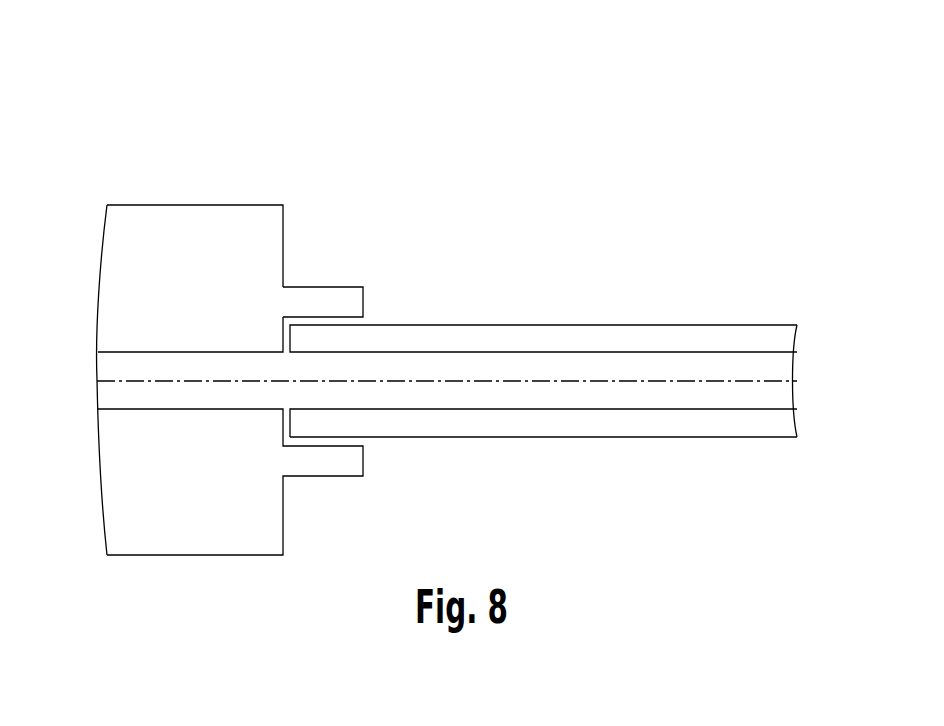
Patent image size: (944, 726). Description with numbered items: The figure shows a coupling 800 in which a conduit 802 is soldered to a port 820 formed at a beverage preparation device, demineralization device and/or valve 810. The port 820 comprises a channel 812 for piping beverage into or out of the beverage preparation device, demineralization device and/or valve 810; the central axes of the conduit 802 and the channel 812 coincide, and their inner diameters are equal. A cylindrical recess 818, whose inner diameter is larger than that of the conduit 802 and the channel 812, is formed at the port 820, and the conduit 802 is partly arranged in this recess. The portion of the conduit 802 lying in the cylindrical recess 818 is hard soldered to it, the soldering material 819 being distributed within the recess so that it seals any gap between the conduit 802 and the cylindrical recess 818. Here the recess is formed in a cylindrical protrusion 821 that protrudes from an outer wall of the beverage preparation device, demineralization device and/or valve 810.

The coupling 800 is at (645, 82).
The conduit 802 is at (737, 342).
The beverage preparation device, demineralization device and/or valve 810 is at (275, 513).
The channel 812 is at (183, 358).
The cylindrical recess 818 is at (346, 418).
The soldering material 819 is at (357, 440).
The port 820 is at (513, 305).
The cylindrical protrusion 821 is at (327, 298).